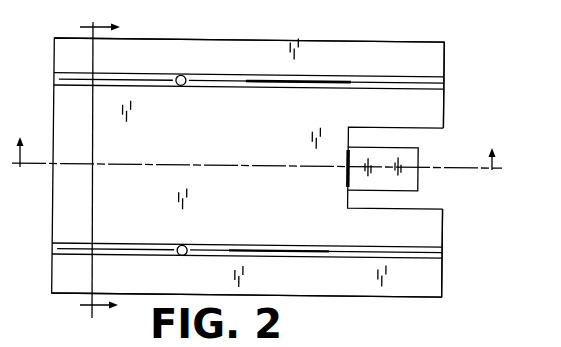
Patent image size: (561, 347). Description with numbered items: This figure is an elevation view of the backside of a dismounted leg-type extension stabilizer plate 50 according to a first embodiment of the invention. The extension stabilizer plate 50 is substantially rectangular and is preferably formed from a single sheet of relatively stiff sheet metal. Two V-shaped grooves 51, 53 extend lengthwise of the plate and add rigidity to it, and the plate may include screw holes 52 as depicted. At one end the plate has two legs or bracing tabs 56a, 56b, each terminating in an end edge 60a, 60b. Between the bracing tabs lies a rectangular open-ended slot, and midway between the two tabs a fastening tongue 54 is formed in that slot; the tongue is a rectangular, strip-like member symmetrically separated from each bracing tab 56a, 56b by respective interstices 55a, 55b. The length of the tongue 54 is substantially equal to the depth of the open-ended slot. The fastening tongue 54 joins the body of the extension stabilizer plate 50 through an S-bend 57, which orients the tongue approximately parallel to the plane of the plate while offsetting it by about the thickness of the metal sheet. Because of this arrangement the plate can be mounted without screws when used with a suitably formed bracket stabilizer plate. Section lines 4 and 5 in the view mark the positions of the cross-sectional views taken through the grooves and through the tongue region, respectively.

The leg-type extension stabilizer plate 50 is at (261, 151).
The V-shaped groove 51 is at (147, 77).
The screw hole 52 is at (184, 72).
The V-shaped groove 53 is at (147, 244).
The fastening tongue 54 is at (412, 173).
The interstice 55a is at (418, 135).
The interstice 55b is at (400, 199).
The bracing tab 56a is at (400, 51).
The bracing tab 56b is at (427, 271).
The S-bend 57 is at (345, 177).
The end edge 60a is at (443, 223).
The end edge 60b is at (443, 98).
The section line 4- 4 is at (90, 166).
The section line 5- 5 is at (256, 170).